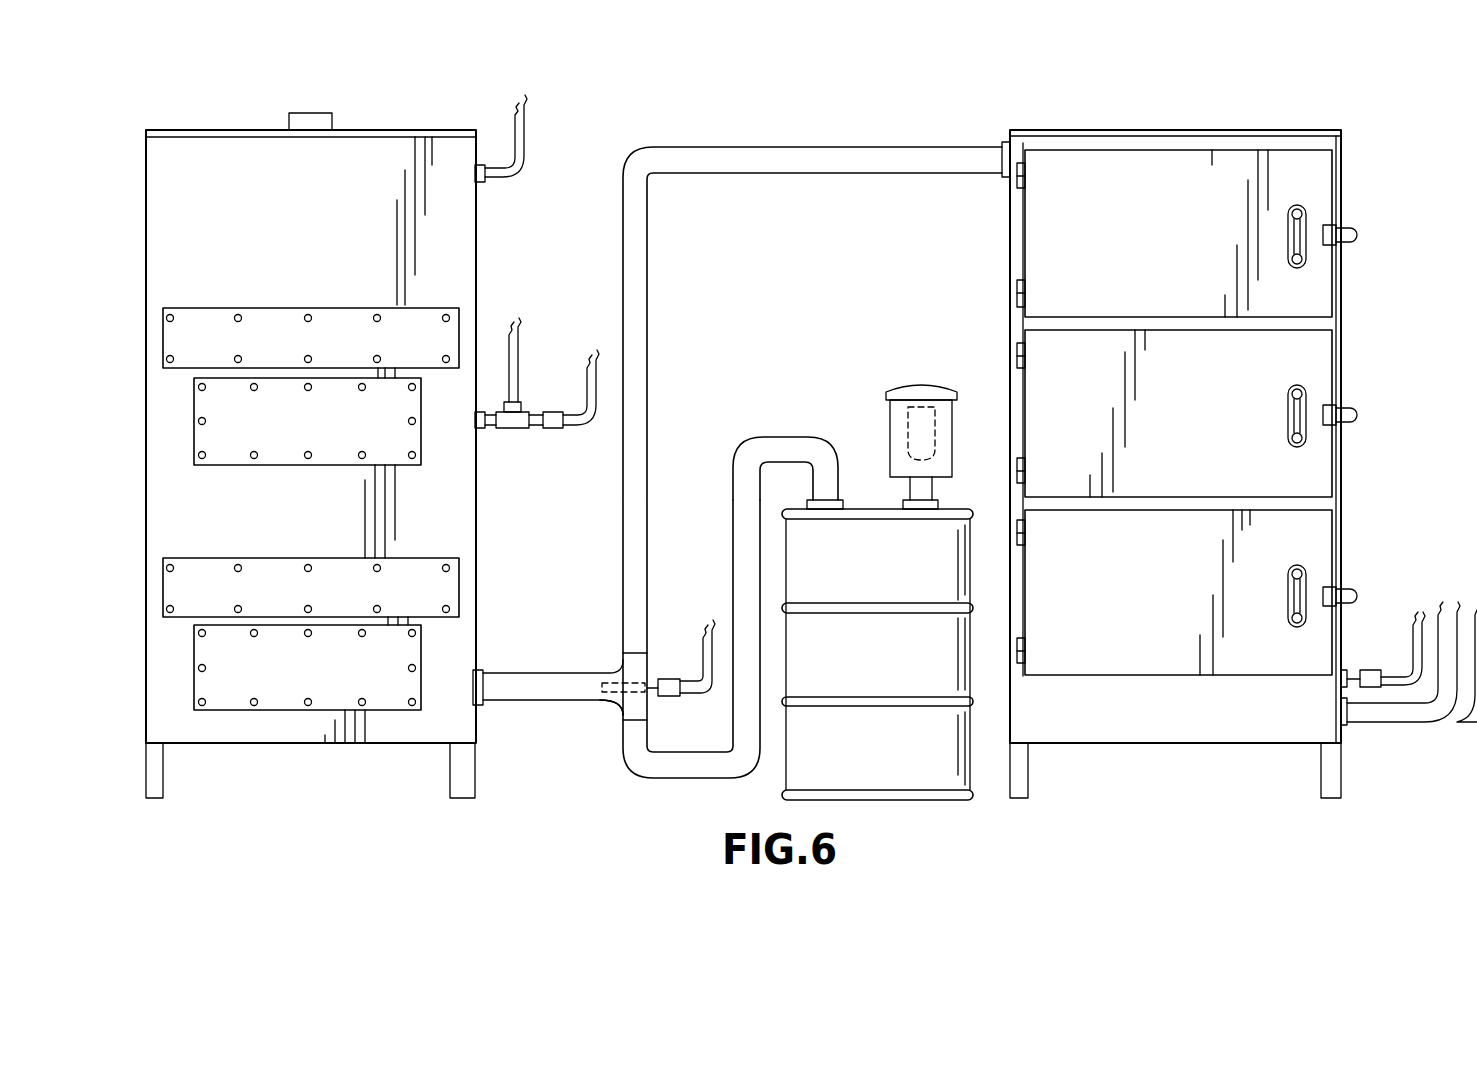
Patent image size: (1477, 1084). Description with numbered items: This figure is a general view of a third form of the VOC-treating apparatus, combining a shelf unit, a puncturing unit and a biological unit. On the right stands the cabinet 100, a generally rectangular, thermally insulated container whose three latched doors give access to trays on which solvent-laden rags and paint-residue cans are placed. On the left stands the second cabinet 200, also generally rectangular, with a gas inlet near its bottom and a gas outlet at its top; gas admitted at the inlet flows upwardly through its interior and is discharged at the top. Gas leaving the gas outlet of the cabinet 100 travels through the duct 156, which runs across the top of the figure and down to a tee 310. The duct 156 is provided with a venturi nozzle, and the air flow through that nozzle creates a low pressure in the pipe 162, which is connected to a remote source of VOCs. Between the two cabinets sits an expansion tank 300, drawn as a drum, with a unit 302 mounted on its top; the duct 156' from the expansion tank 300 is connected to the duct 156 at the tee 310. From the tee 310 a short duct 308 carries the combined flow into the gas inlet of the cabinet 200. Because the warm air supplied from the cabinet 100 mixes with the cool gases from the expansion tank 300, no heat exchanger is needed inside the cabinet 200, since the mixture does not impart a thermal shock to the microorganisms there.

The cabinet 100 is at (1229, 130).
The cabinet 200 is at (409, 130).
The duct 156 is at (816, 428).
The duct 156' is at (788, 436).
The pipe 162 is at (697, 660).
The expansion tank 300 is at (917, 801).
The pump 302 is at (916, 382).
The duct 308 is at (541, 672).
The tee 310 is at (617, 704).